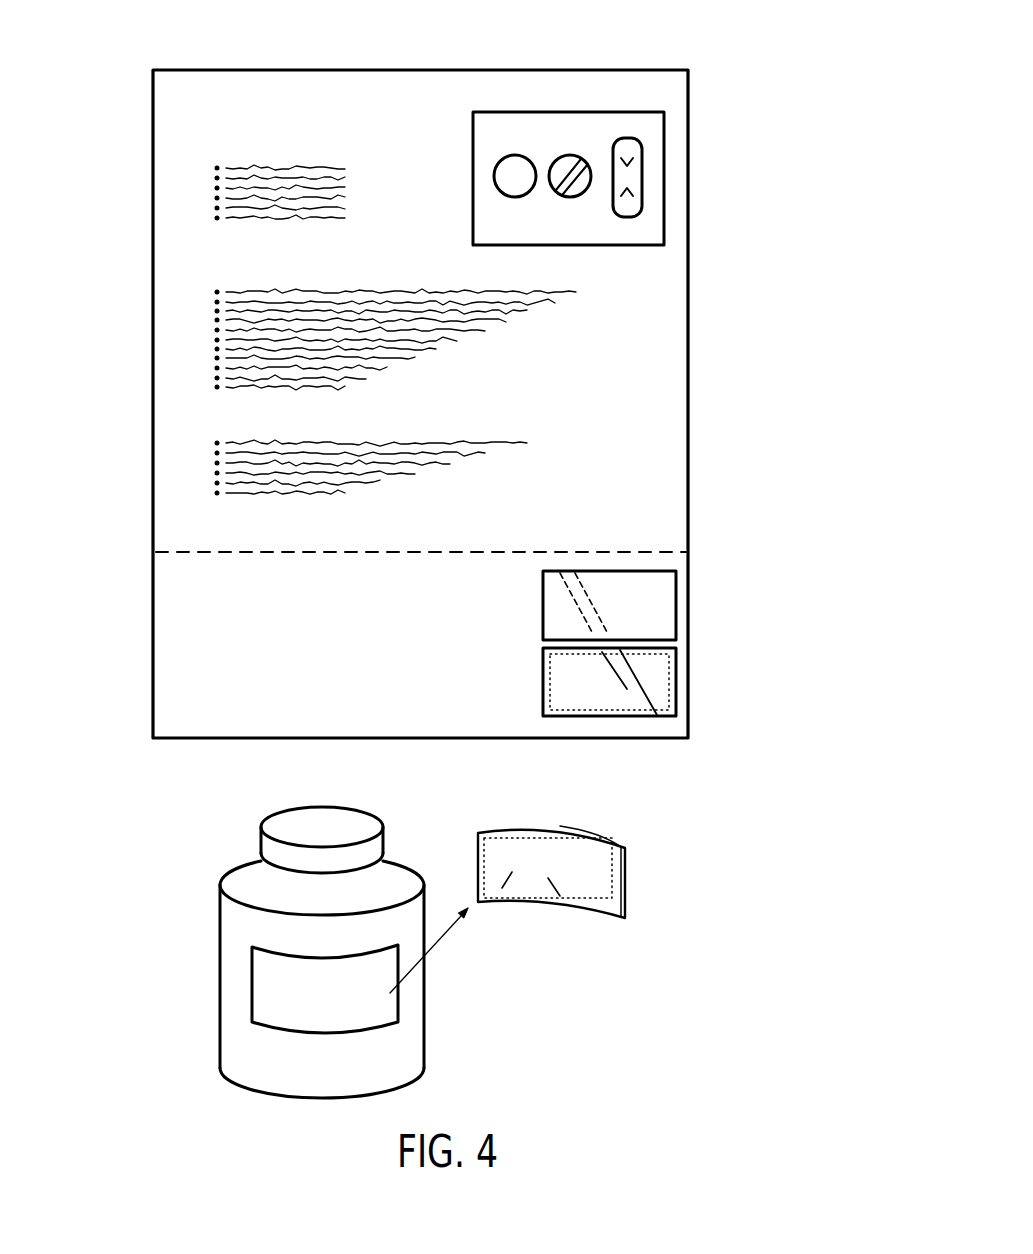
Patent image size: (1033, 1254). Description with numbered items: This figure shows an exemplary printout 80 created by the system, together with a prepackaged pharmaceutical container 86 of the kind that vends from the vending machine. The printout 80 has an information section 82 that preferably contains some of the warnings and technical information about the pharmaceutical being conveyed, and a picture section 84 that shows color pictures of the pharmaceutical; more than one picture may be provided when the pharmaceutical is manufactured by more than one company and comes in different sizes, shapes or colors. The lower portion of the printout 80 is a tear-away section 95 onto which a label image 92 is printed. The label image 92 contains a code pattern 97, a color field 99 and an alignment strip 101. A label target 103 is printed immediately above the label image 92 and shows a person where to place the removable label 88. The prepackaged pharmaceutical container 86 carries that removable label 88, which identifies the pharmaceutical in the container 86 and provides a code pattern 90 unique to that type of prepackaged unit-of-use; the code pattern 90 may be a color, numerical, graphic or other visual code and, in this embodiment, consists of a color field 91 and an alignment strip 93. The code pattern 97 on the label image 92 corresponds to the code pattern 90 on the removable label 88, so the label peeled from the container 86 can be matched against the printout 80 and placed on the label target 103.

The printout 80 is at (614, 44).
The information section 82 is at (178, 226).
The picture section 84 is at (652, 231).
The prepackaged pharmaceutical container 86 is at (410, 1033).
The removable label 88 is at (640, 900).
The code pattern 90 is at (583, 842).
The color field 91 is at (502, 892).
The label image 92 is at (673, 688).
The alignment strip 93 is at (557, 895).
The tear-away section 95 is at (145, 715).
The code pattern 97 is at (670, 657).
The color field 99 is at (572, 712).
The alignment strip 101 is at (637, 709).
The label target 103 is at (662, 607).